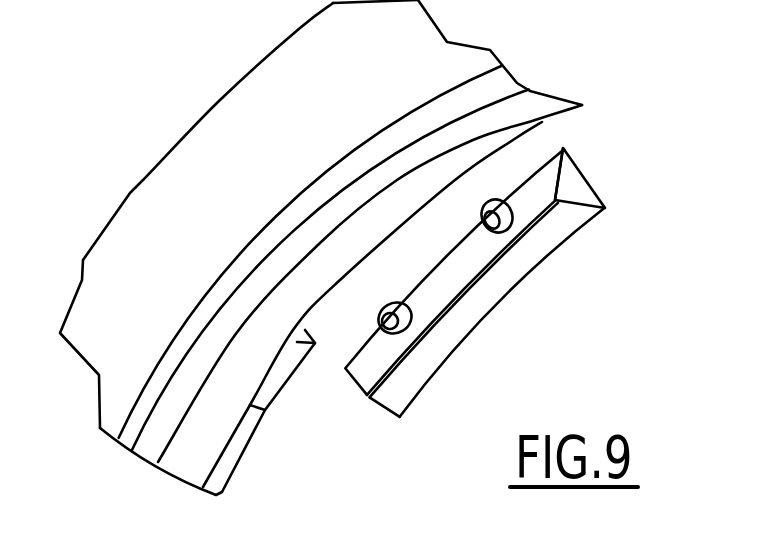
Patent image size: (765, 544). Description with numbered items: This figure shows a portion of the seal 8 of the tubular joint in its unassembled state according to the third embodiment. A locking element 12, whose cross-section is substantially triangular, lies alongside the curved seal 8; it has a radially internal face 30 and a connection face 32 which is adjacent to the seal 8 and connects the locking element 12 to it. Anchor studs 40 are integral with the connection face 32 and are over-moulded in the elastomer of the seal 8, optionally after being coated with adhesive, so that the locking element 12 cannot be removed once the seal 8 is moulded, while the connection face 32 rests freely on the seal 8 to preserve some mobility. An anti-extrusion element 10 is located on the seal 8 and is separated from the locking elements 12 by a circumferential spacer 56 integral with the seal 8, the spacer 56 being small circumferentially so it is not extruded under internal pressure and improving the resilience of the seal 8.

The seal 8 is at (283, 108).
The anti-extrusion elements 10 is at (220, 475).
The locking element 12 is at (508, 240).
The radially internal face 30 is at (572, 238).
The connection face 32 is at (547, 198).
The anchor studs 40 is at (480, 220).
The circumferential spacer 56 is at (275, 383).